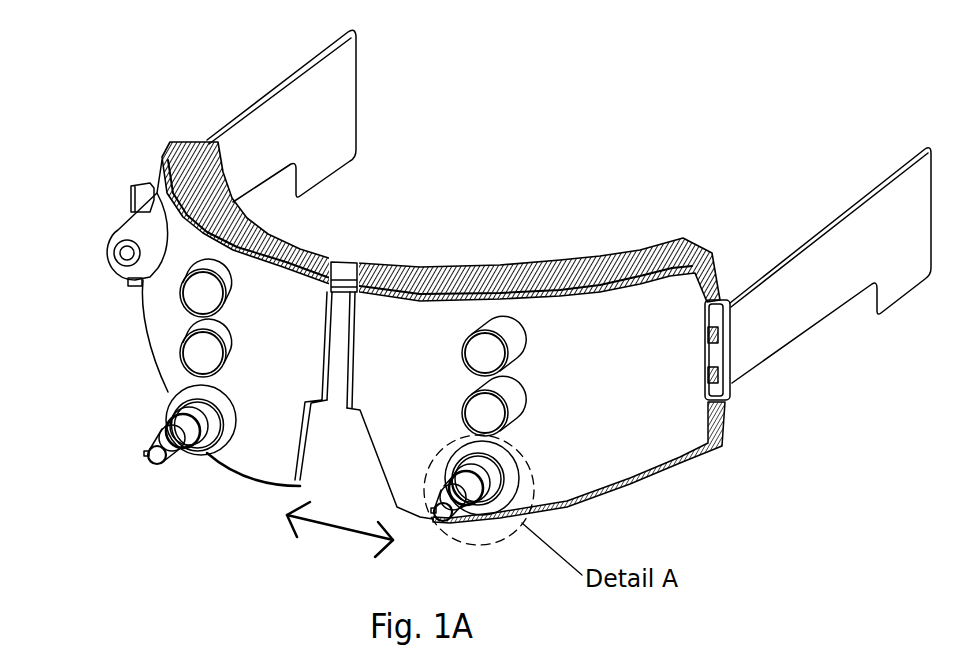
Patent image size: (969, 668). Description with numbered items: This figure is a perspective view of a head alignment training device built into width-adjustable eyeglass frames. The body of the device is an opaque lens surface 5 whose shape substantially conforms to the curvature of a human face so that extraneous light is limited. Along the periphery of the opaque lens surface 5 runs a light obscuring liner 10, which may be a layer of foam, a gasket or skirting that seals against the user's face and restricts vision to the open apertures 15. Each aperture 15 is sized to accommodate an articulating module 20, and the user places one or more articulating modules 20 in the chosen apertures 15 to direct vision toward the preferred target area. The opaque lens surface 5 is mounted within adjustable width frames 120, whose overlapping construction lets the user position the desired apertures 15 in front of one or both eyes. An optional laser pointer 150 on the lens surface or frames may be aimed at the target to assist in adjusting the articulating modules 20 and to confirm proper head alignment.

The opaque lens surface 5 is at (645, 443).
The light obscuring liner 10 is at (468, 275).
The aperture 15 is at (503, 335).
The articulating module 20 is at (182, 448).
The adjustable width frames 120 is at (350, 273).
The laser pointer 150 is at (128, 273).